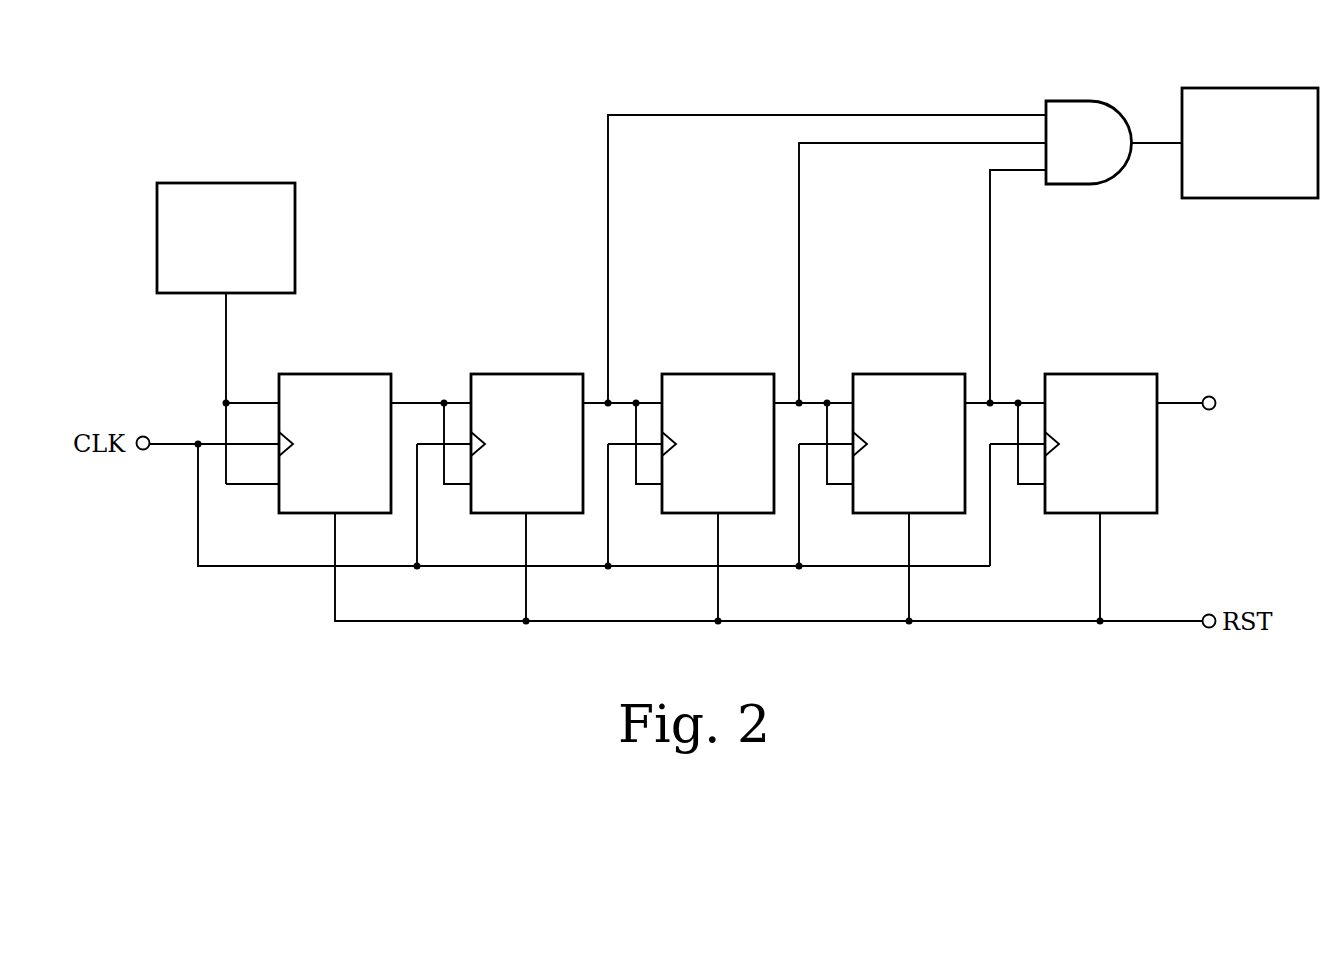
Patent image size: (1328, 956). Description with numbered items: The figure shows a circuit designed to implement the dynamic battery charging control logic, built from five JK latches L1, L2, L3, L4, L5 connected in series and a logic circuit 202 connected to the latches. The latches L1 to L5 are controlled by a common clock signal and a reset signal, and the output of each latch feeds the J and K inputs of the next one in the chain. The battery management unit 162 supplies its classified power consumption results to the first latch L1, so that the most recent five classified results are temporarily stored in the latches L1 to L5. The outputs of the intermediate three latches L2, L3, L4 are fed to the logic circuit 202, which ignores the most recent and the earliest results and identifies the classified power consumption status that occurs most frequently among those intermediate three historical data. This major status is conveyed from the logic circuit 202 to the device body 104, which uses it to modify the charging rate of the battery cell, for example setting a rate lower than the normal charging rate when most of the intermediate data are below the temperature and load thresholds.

The battery management unit 162 is at (226, 183).
The logic circuit 202 is at (1086, 101).
The device body 104 is at (1250, 88).
The JK latch L1 is at (331, 374).
The JK latch L2 is at (523, 374).
The JK latch L3 is at (714, 374).
The JK latch L4 is at (905, 374).
The JK latch L5 is at (1097, 374).